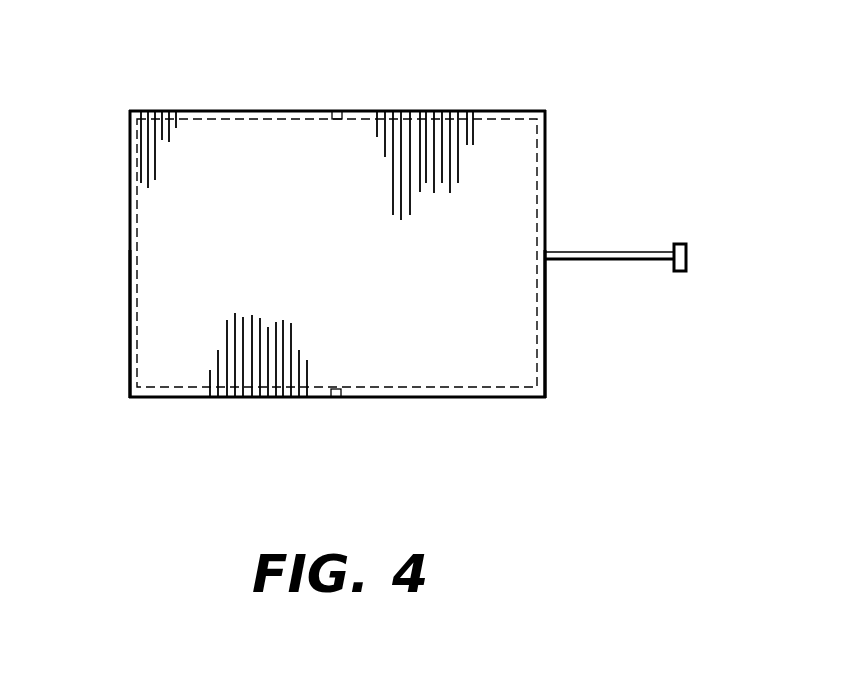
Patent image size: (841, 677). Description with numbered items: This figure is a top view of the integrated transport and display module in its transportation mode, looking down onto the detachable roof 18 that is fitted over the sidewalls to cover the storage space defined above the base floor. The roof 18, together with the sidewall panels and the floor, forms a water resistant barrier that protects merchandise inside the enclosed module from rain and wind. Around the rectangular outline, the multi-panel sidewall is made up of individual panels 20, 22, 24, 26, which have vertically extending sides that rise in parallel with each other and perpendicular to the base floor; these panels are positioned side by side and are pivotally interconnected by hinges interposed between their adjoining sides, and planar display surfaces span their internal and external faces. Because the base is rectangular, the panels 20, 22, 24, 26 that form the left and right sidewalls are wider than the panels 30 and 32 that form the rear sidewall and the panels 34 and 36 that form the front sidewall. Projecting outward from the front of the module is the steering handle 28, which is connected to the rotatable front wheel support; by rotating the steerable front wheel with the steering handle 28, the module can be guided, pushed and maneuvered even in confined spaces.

The detachable roof 18 is at (231, 163).
The individual panel 20 is at (260, 398).
The individual panel 22 is at (432, 398).
The individual panel 24 is at (270, 120).
The individual panel 26 is at (437, 112).
The steering handle 28 is at (640, 258).
The panel 30 is at (130, 310).
The panel 32 is at (130, 175).
The panel 34 is at (545, 320).
The panel 36 is at (545, 177).